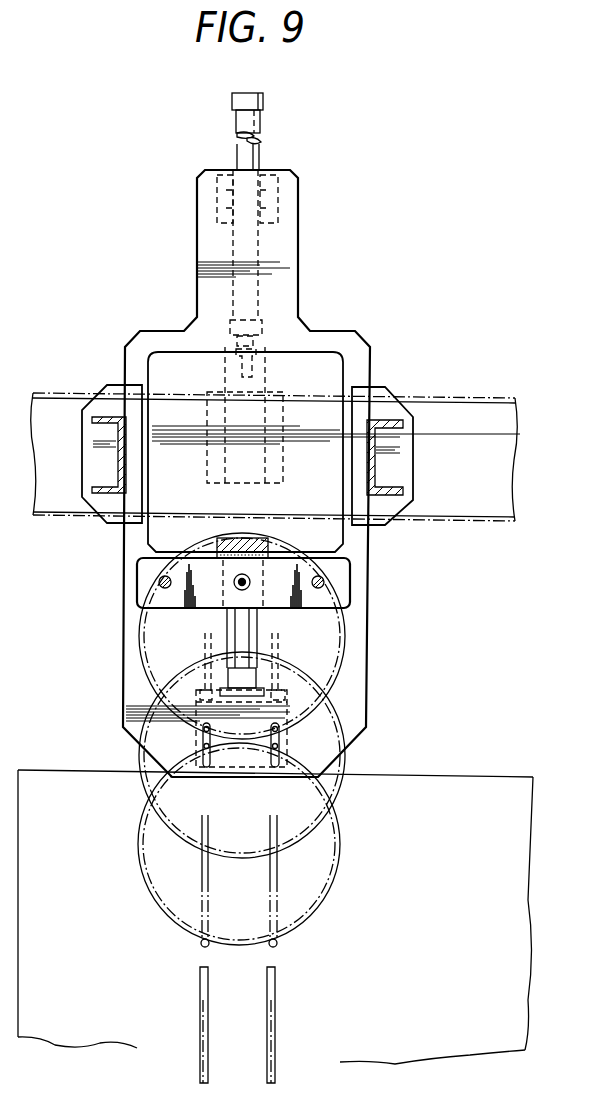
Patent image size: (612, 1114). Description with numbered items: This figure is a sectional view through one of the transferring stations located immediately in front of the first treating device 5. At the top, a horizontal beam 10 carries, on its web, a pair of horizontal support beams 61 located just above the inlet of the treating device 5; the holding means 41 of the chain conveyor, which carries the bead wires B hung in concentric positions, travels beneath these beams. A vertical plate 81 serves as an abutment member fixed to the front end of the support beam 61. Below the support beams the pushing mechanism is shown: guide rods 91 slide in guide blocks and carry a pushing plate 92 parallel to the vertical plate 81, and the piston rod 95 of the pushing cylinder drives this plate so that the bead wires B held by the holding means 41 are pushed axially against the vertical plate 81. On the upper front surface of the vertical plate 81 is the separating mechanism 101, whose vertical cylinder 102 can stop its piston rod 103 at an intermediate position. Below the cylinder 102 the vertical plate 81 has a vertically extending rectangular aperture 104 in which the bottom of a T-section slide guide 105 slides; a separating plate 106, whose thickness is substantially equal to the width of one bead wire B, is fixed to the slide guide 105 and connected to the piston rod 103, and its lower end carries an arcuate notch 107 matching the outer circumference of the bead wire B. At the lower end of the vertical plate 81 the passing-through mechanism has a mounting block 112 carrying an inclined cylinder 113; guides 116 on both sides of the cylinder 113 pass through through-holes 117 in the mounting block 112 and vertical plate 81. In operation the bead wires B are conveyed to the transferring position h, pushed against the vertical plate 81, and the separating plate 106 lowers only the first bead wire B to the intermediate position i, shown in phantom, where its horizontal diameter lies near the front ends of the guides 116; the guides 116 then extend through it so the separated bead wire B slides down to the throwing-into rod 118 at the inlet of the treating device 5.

The vertical cylinder 102 is at (262, 125).
The separating mechanism 101 is at (302, 212).
The vertical plate 81 is at (278, 289).
The piston rod 103 is at (237, 340).
The separating plate 106 is at (325, 380).
The horizontal beam 10 is at (452, 400).
The support beams 61 is at (100, 418).
The slide guide 105 is at (282, 447).
The arcuate notch 107 is at (283, 552).
The holding means 41 is at (210, 552).
The pushing plate 92 is at (352, 566).
The guide rods 91 is at (160, 582).
The piston rod 95 is at (236, 588).
The rectangular aperture 104 is at (262, 618).
The cylinder 113 is at (240, 633).
The mounting block 112 is at (194, 704).
The through-holes 117 is at (203, 728).
The guides 116 is at (282, 640).
The bead wire B is at (340, 658).
The transferring position h is at (345, 628).
The intermediate position i is at (345, 762).
The first treating device 5 is at (448, 778).
The throwing-into rod 118 is at (267, 985).